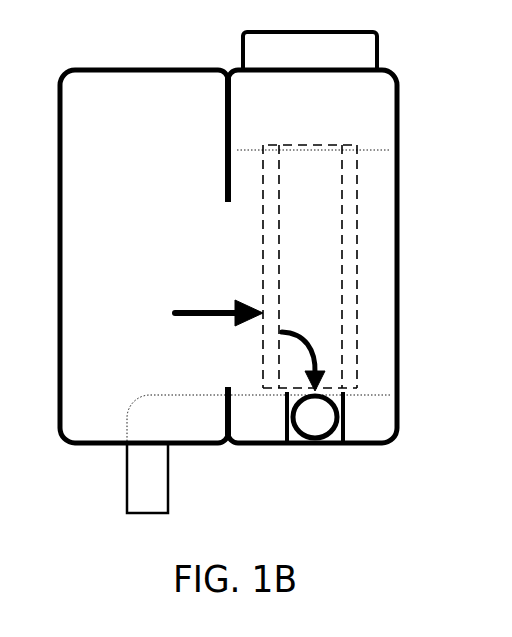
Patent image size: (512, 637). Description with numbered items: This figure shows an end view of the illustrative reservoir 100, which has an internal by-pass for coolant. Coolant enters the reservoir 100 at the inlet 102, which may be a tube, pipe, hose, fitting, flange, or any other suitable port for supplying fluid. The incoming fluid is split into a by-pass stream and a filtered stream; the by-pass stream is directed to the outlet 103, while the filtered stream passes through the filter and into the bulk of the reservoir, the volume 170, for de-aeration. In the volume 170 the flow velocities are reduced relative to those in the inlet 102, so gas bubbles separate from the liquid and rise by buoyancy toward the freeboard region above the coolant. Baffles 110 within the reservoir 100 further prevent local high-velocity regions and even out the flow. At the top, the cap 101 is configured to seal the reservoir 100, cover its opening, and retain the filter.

The reservoir 100 is at (493, 278).
The cap 101 is at (378, 49).
The inlet 102 is at (310, 417).
The outlet 103 is at (148, 480).
The baffles 110 is at (225, 135).
The volume 170 is at (165, 146).